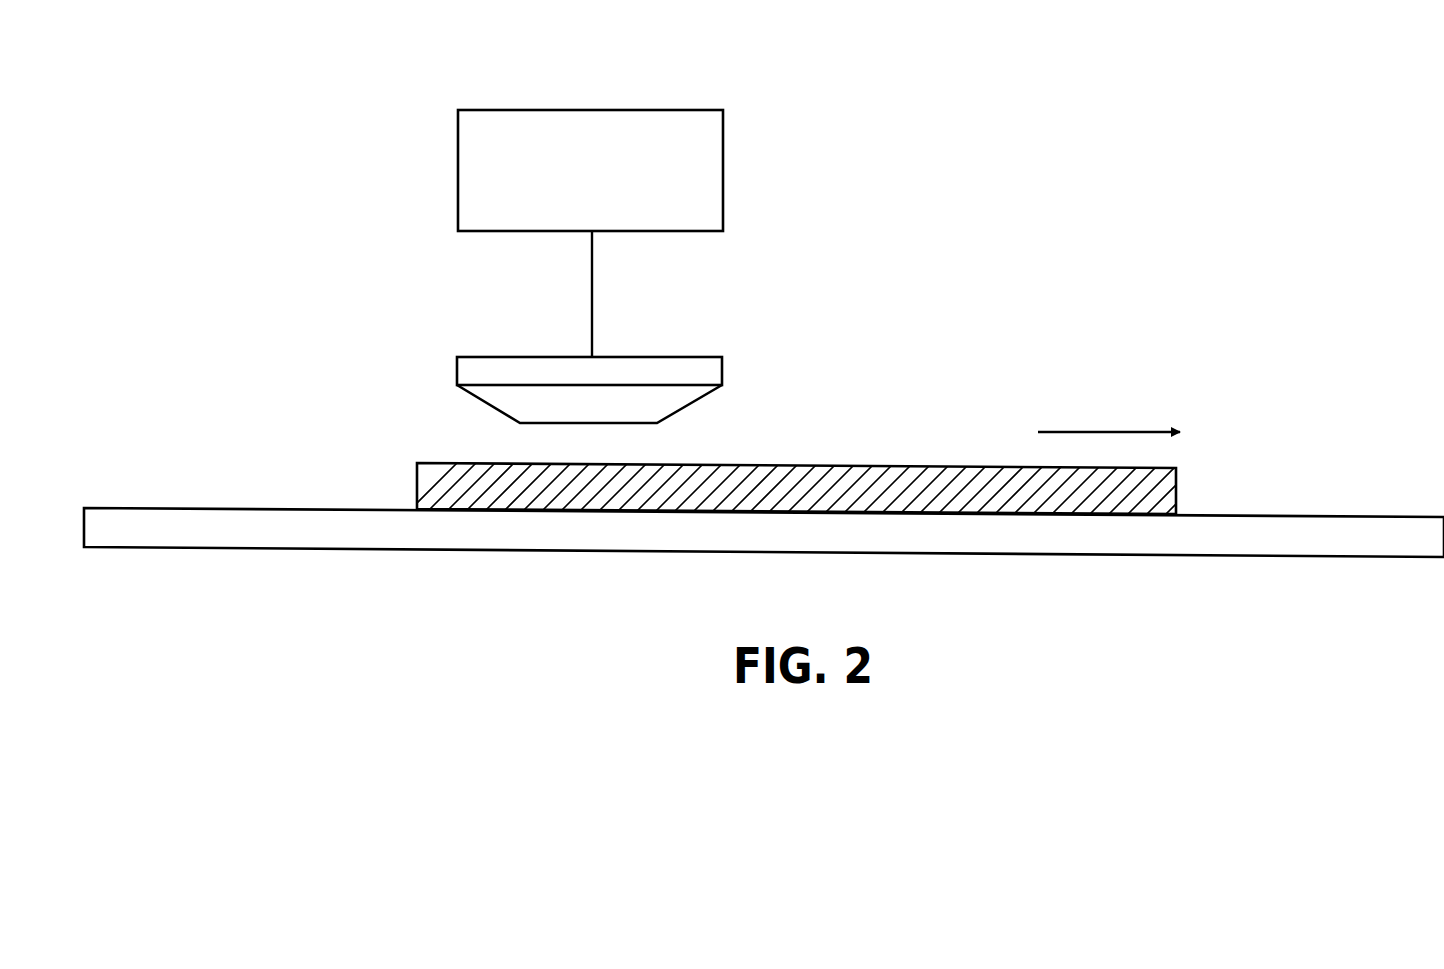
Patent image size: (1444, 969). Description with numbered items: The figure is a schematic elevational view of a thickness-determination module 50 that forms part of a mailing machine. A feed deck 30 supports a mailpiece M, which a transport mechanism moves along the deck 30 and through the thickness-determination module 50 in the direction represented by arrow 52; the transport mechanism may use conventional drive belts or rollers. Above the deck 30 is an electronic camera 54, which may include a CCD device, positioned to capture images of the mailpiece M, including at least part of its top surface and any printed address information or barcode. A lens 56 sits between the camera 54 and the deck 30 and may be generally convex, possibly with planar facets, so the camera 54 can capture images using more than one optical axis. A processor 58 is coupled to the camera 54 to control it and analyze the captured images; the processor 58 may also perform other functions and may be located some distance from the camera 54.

The processor 58 is at (578, 110).
The electronic camera 54 is at (513, 357).
The lens 56 is at (683, 410).
The thickness-determination module 50 is at (846, 226).
The mailpiece M is at (867, 464).
The arrow 52 is at (1108, 432).
The feed deck 30 is at (1280, 517).